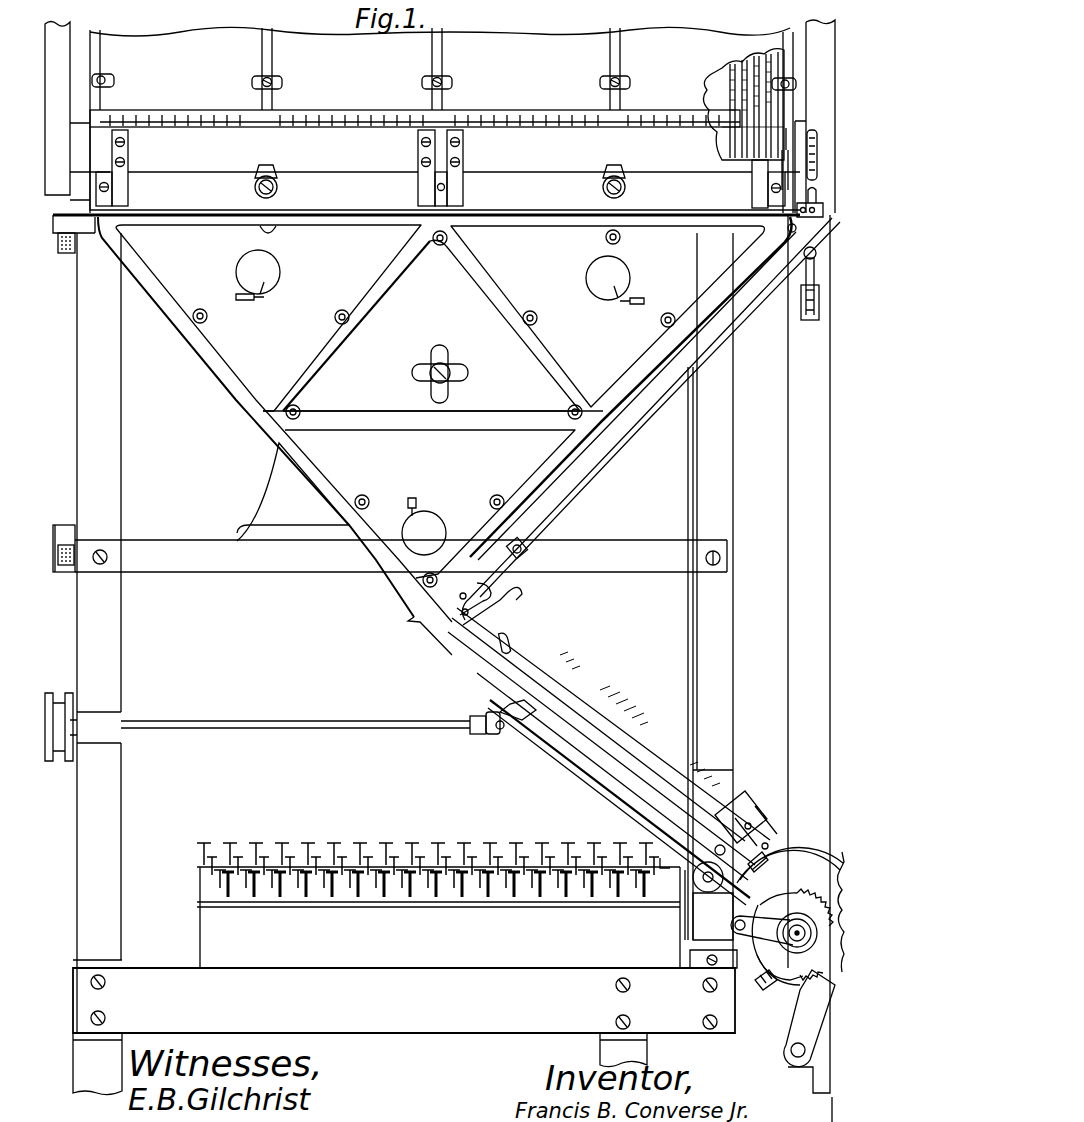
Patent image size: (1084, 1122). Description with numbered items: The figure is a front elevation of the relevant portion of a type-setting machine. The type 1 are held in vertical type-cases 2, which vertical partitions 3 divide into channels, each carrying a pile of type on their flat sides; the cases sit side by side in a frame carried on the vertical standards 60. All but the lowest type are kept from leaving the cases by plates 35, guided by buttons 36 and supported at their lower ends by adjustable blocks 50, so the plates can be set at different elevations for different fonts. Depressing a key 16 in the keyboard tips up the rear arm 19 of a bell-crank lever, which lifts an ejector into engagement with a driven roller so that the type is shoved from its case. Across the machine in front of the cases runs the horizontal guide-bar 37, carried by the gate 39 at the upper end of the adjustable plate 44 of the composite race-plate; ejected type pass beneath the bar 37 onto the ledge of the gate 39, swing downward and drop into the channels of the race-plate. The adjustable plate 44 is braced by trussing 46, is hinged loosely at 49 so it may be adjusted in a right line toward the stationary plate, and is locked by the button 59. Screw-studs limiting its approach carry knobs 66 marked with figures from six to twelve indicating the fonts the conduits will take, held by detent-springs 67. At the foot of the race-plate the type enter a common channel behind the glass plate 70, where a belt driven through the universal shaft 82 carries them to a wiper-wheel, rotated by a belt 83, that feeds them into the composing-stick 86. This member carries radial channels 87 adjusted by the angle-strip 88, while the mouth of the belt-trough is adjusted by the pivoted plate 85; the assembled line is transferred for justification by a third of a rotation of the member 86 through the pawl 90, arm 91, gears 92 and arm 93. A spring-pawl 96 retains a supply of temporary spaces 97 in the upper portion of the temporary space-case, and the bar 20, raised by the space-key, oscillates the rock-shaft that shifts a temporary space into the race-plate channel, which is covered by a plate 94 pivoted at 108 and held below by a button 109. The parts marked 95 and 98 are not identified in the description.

The type 1 is at (728, 76).
The vertical type-cases 2 is at (712, 108).
The vertical partitions 3 is at (718, 84).
The key 16 is at (357, 843).
The rear arm of bell-crank lever 19 is at (661, 853).
The bar 20 is at (684, 494).
The plates 35 is at (400, 62).
The buttons 36 is at (631, 84).
The horizontal guide-bar 37 is at (350, 112).
The gate 39 is at (445, 168).
The adjustable plate 44 is at (431, 325).
The trussing 46 is at (470, 262).
The hinge 49 is at (66, 258).
The blocks 50 is at (770, 150).
The button 59 is at (448, 362).
The vertical standards 60 is at (403, 633).
The knobs 66 is at (282, 272).
The detent-springs 67 is at (402, 498).
The glass plate 70 is at (628, 742).
The universal shaft 82 is at (274, 727).
The belt 83 is at (586, 770).
The pivoted plate 85 is at (725, 844).
The composing-stick 86 is at (800, 906).
The radial channel 87 is at (765, 858).
The angle-strip 88 is at (775, 875).
The pawl 90 is at (730, 906).
The arm 91 is at (762, 930).
The gears 92 is at (790, 960).
The arm 93 is at (809, 1018).
The plate 94 is at (620, 438).
The post 95 is at (810, 668).
The spring-pawl 96 is at (804, 262).
The temporary spaces 97 is at (818, 158).
The bracket 98 is at (823, 206).
The pivot 108 is at (790, 233).
The button 109 is at (528, 558).